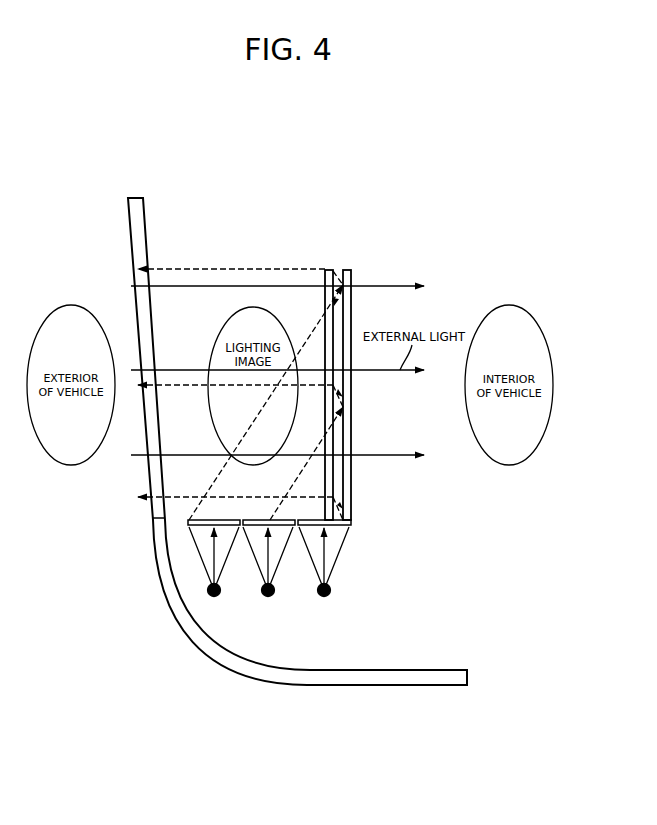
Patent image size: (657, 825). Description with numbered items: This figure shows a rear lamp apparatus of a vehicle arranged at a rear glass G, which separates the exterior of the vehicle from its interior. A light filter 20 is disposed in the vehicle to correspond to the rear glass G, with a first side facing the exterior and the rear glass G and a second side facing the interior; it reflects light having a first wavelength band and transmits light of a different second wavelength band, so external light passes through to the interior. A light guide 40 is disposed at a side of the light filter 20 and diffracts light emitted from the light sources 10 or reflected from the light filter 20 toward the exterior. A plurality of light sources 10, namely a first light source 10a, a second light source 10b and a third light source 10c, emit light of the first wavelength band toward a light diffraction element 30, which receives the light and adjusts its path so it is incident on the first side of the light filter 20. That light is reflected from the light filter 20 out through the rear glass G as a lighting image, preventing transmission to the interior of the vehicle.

The rear glass G is at (131, 228).
The light source 10 is at (269, 635).
The first light source 10a is at (214, 597).
The second light source 10b is at (268, 597).
The third light source 10c is at (324, 597).
The light filter 20 is at (351, 488).
The light diffraction element 30 is at (287, 520).
The light guide 40 is at (330, 318).